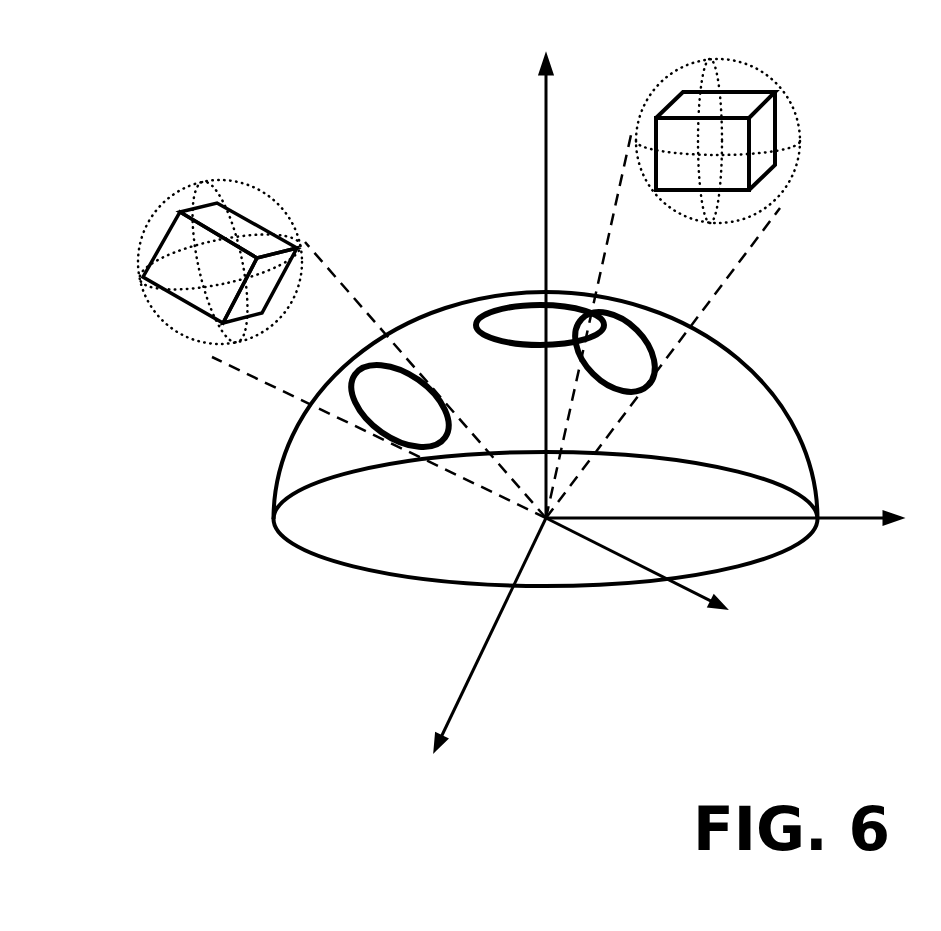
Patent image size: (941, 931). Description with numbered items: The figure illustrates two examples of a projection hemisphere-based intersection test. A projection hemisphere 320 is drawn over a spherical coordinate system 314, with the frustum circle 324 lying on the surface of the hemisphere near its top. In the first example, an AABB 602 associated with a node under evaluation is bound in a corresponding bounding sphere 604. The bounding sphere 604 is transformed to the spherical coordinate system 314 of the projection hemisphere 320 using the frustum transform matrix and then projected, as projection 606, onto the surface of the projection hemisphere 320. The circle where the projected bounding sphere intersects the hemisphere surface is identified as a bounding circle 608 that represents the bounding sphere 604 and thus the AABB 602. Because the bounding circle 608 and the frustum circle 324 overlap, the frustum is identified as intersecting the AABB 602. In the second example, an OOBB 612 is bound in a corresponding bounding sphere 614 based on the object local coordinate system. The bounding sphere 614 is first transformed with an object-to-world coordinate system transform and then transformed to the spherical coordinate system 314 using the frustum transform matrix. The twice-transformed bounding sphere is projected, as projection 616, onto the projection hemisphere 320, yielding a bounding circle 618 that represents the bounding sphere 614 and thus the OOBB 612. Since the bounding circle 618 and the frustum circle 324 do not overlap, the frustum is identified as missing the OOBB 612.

The spherical coordinate system 314 is at (590, 625).
The projection hemisphere 320 is at (805, 452).
The frustum circle 324 is at (515, 300).
The AABB 602 is at (758, 128).
The bounding sphere 604 is at (785, 183).
The projection 606 is at (742, 258).
The bounding circle 608 is at (653, 383).
The OOBB 612 is at (202, 218).
The bounding sphere 614 is at (283, 215).
The projection 616 is at (343, 283).
The bounding circle 618 is at (436, 388).